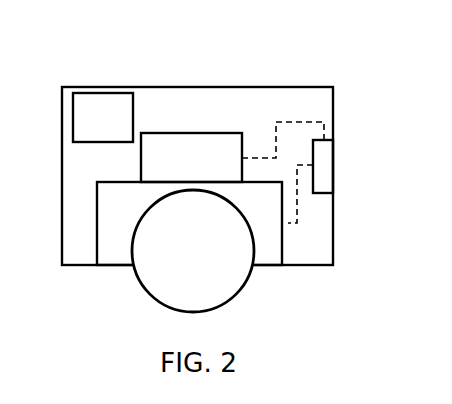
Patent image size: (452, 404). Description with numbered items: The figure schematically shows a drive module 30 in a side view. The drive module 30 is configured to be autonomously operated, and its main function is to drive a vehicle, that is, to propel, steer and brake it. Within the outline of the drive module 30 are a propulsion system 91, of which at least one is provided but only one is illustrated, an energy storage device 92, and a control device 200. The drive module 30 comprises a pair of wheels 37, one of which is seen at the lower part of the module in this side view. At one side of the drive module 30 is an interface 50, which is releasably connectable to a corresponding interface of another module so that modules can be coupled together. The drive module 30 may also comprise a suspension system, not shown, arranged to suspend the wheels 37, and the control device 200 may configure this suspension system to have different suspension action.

The drive module 30 is at (232, 87).
The control device 200 is at (121, 129).
The energy storage device 92 is at (177, 163).
The propulsion system 91 is at (130, 210).
The wheel 37 is at (155, 300).
The interface 50 is at (334, 161).